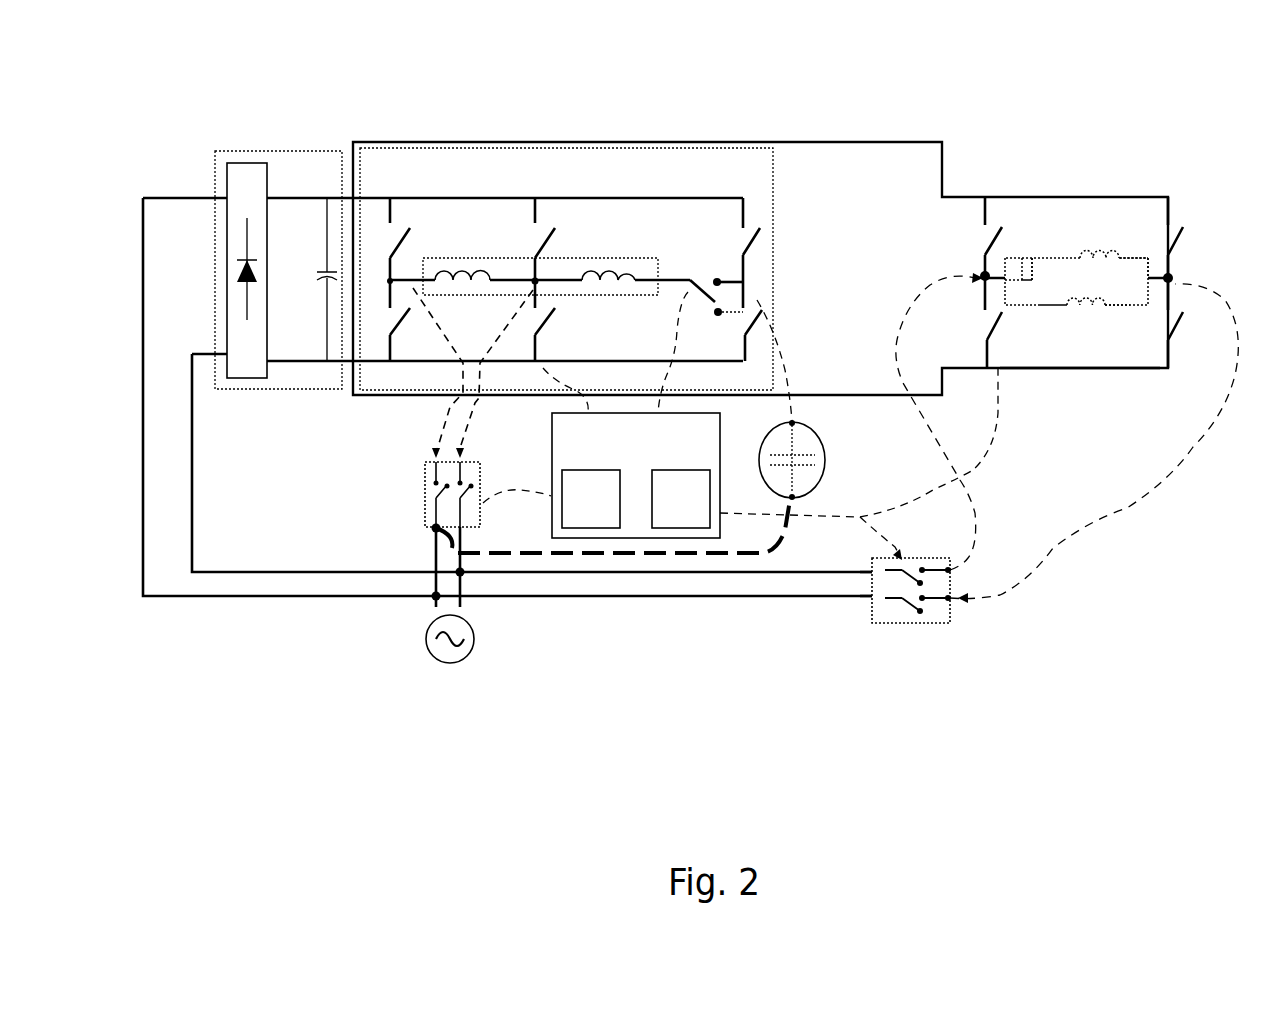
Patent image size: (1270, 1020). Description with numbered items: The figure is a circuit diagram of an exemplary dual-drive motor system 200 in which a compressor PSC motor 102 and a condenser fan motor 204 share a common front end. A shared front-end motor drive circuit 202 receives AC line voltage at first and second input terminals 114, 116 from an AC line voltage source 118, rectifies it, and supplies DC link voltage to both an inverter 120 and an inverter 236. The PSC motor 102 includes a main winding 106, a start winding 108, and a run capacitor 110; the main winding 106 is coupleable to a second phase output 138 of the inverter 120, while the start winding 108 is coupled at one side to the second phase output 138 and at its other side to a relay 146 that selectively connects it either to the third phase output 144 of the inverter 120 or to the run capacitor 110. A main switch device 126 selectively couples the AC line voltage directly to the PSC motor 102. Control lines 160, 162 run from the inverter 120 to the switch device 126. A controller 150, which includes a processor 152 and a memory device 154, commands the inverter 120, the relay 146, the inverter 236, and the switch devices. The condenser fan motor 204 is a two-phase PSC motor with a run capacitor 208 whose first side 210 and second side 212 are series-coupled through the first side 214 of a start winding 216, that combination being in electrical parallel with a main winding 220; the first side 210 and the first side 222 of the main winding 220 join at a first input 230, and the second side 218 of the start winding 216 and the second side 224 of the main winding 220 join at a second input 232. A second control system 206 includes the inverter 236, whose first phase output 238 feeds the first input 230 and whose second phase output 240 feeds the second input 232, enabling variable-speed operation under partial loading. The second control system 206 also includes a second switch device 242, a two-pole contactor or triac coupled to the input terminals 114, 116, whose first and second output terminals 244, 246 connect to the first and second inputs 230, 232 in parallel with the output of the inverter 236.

The dual-drive motor system 200 is at (279, 57).
The shared front-end motor drive circuit 202 is at (226, 151).
The inverter 120 is at (427, 150).
The main winding 106 is at (463, 268).
The PSC motor 102 is at (564, 278).
The start winding 108 is at (608, 268).
The second phase output 138 is at (537, 283).
The third phase output 144 is at (743, 280).
The relay 146 is at (745, 289).
The run capacitor 110 is at (808, 425).
The controller 150 is at (745, 426).
The processor 152 is at (591, 499).
The memory device 154 is at (681, 499).
The control line 160 is at (433, 447).
The control line 162 is at (463, 443).
The main switch device 126 is at (424, 465).
The first input terminal 114 is at (432, 549).
The second input terminal 116 is at (463, 603).
The AC line voltage source 118 is at (425, 633).
The first side of run capacitor 210 is at (1013, 257).
The run capacitor 208 is at (1030, 257).
The second side of run capacitor 212 is at (1050, 257).
The first side of start winding 214 is at (1057, 257).
The start winding 216 is at (1110, 247).
The second side of start winding 218 is at (1127, 257).
The second input 232 is at (1152, 280).
The second phase output 240 is at (1172, 290).
The first phase output 238 is at (983, 273).
The first input 230 is at (1003, 285).
The first side of main winding 222 is at (1063, 302).
The main winding 220 is at (1090, 305).
The second side of main winding 224 is at (1103, 307).
The condenser fan motor 204 is at (1109, 239).
The inverter 236 is at (1096, 370).
The first output terminal 244 is at (967, 503).
The second output terminal 246 is at (1053, 550).
The second switch device 242 is at (870, 586).
The second control system 206 is at (878, 605).